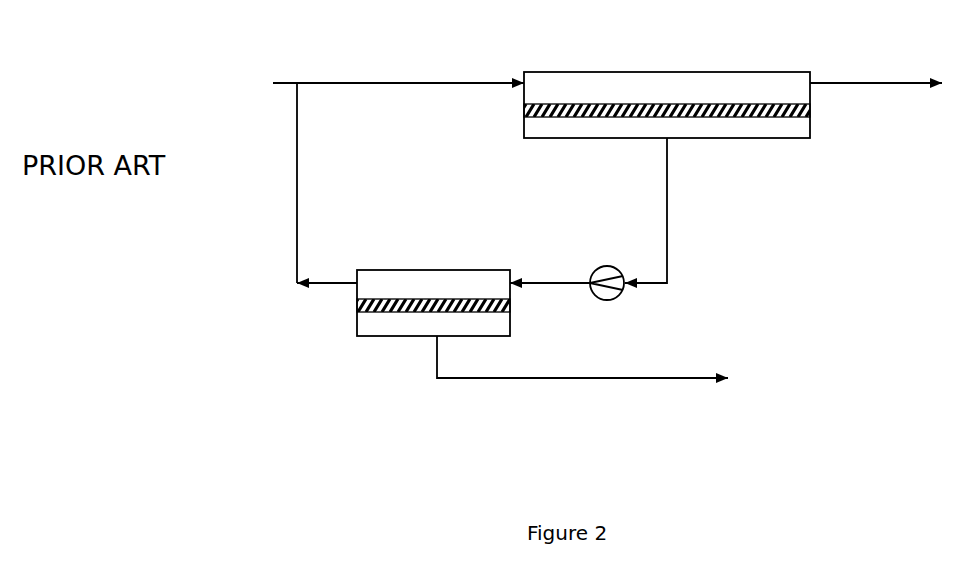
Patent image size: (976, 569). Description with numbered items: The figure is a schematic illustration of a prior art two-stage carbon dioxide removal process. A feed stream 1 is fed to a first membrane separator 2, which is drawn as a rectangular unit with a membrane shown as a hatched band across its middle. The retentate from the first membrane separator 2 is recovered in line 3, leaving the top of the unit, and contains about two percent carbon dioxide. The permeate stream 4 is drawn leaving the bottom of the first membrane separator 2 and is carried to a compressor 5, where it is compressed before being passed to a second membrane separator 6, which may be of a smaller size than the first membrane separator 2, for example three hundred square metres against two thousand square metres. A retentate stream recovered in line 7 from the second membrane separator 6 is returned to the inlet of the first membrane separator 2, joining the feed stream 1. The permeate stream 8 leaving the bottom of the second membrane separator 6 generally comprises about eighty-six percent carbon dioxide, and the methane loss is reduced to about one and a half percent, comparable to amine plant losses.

The feed stream 1 is at (363, 73).
The first membrane separator 2 is at (738, 63).
The line 3 is at (890, 73).
The permeate stream 4 is at (660, 207).
The compressor 5 is at (604, 265).
The second membrane separator 6 is at (428, 260).
The line 7 is at (295, 141).
The permeate stream 8 is at (663, 376).